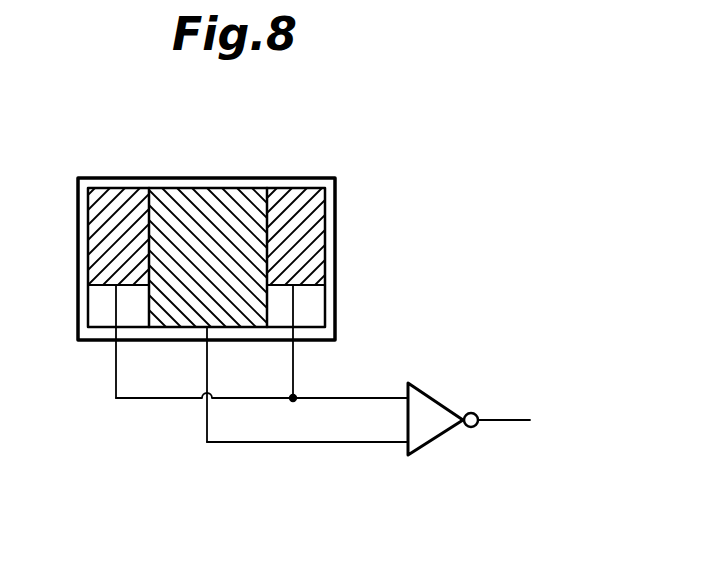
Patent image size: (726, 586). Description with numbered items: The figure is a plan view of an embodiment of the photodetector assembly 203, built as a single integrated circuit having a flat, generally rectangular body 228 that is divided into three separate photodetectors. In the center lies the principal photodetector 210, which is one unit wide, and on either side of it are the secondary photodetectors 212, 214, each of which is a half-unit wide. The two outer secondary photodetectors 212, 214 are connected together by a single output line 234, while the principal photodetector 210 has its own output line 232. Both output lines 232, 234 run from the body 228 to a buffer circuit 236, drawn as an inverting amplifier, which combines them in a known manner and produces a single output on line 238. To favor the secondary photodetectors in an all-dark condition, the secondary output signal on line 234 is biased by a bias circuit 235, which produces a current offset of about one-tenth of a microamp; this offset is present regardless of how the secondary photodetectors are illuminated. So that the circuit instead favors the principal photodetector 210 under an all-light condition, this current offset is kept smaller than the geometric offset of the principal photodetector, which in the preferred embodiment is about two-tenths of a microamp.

The sensor device 203 is at (372, 213).
The principal photodetector 210 is at (197, 202).
The secondary photodetector 212 is at (125, 208).
The secondary photodetector 214 is at (312, 197).
The flat generally rectangular body 228 is at (78, 340).
The output line 232 is at (207, 442).
The output line 234 is at (322, 398).
The bias circuit 235 is at (116, 398).
The buffer circuit 236 is at (428, 407).
The output line 238 is at (507, 419).